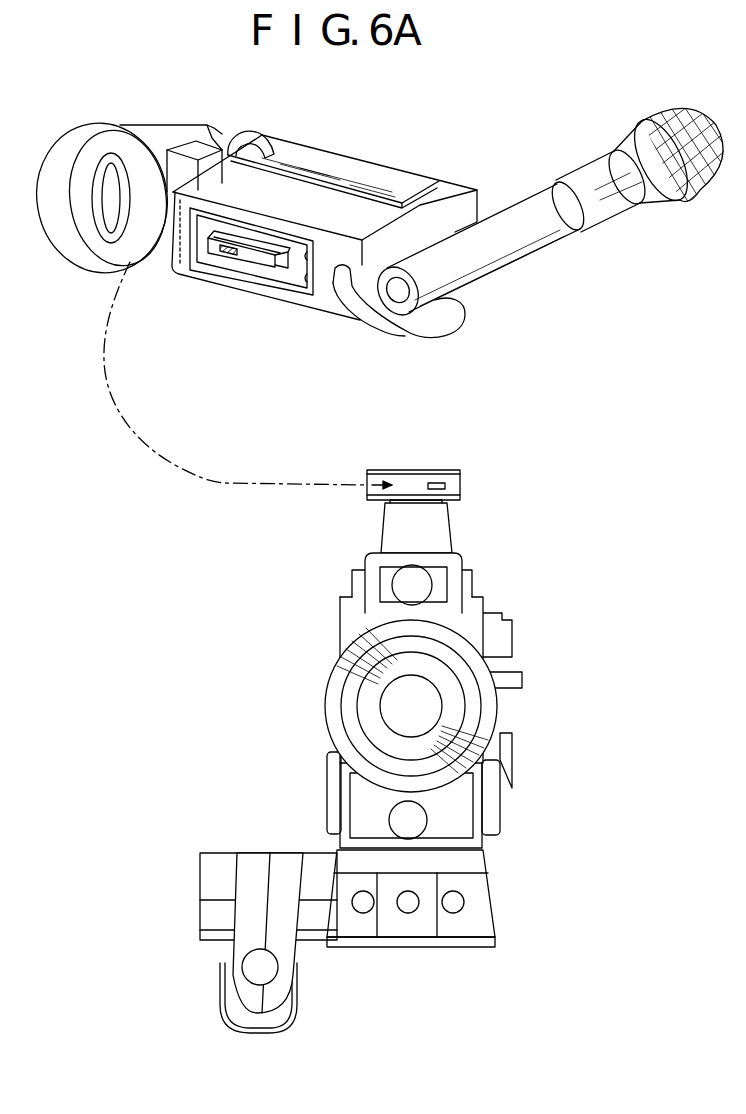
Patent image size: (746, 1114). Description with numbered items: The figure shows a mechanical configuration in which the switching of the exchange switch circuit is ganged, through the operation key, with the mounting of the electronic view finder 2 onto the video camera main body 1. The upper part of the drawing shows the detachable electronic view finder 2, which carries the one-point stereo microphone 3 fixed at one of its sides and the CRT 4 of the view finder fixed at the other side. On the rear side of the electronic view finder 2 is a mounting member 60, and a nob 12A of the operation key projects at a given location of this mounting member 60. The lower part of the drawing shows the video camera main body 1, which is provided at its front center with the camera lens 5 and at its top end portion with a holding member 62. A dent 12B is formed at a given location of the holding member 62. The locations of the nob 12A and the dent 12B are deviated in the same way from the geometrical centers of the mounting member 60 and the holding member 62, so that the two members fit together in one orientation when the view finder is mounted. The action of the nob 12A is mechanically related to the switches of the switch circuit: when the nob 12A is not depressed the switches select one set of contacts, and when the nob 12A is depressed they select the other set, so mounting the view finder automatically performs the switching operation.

The video camera main body 1 is at (457, 818).
The electronic view finder 2 is at (407, 180).
The one-point stereo microphone 3 is at (598, 213).
The CRT 4 is at (73, 245).
The camera lens 5 is at (352, 710).
The nob 12A is at (225, 254).
The dent 12B is at (445, 486).
The mounting member 60 is at (257, 260).
The holding member 62 is at (413, 470).